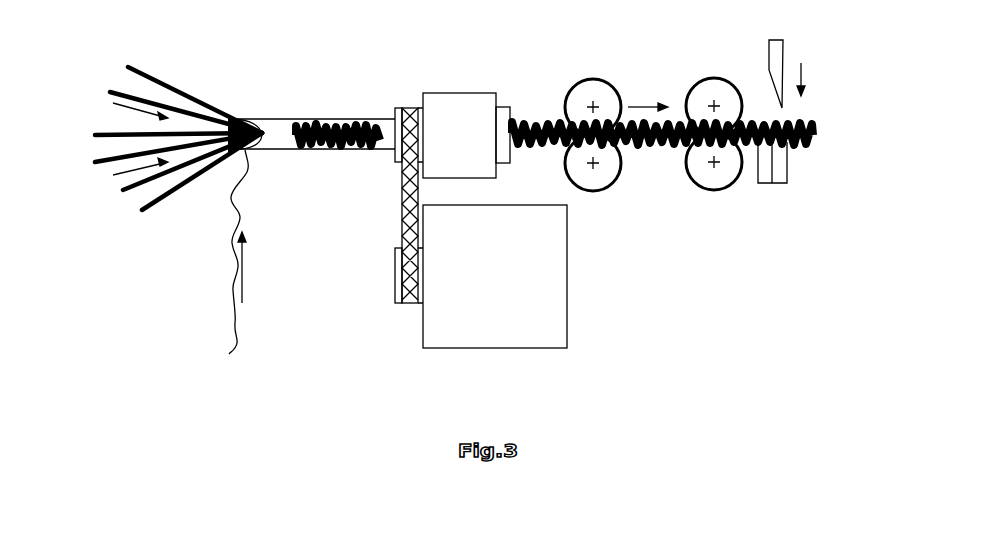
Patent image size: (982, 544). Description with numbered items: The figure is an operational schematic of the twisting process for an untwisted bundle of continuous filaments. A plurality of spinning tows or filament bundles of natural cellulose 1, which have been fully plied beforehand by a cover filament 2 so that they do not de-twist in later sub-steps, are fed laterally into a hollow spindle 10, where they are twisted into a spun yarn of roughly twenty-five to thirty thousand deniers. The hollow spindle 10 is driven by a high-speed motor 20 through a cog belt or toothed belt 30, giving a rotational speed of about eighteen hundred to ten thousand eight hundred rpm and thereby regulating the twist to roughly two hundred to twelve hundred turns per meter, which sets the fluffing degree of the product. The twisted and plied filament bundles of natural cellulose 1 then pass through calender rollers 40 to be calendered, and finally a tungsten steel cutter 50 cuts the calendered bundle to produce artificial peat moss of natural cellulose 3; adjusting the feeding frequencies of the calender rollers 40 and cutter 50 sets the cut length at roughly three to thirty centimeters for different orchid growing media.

The filament bundles of natural cellulose 1 is at (122, 92).
The cover filament 2 is at (236, 320).
The artificial peat moss of natural cellulose 3 is at (810, 142).
The hollow spindle 10 is at (457, 107).
The high-speed motor 20 is at (550, 308).
The toothed belt 30 is at (410, 213).
The calender rollers 40 is at (588, 92).
The cutter 50 is at (785, 48).